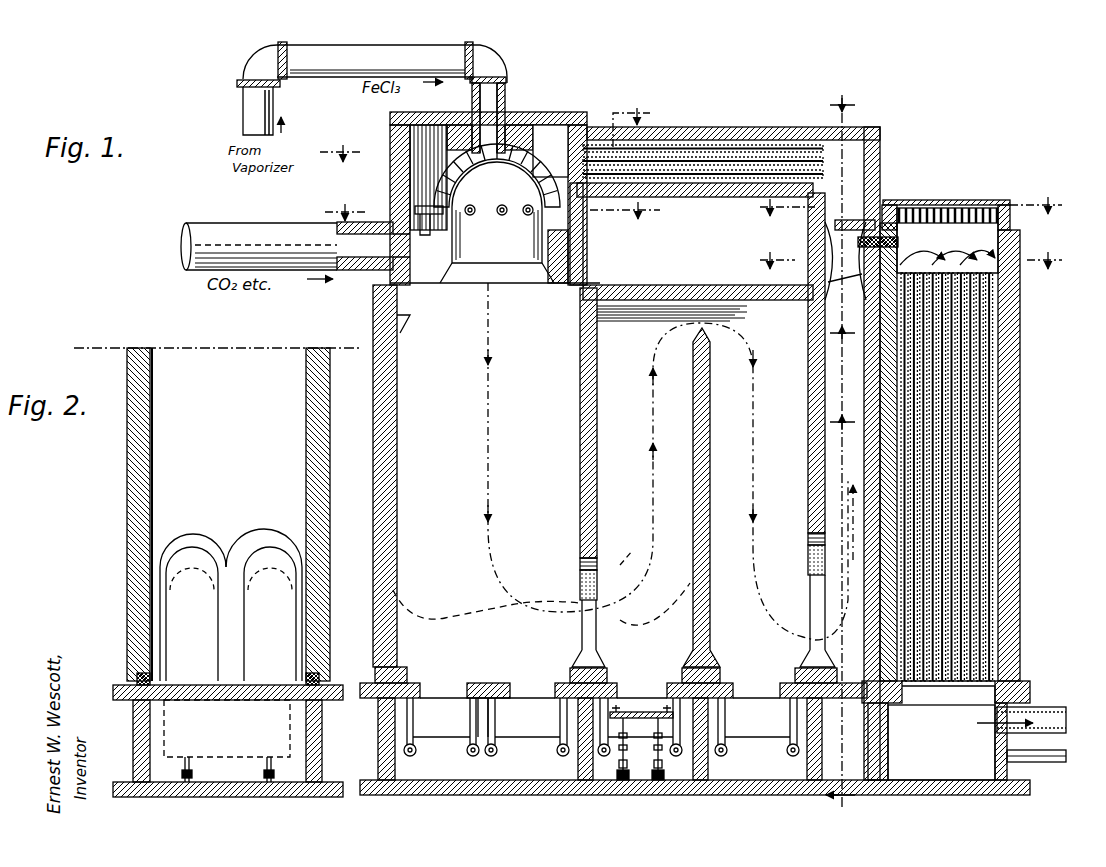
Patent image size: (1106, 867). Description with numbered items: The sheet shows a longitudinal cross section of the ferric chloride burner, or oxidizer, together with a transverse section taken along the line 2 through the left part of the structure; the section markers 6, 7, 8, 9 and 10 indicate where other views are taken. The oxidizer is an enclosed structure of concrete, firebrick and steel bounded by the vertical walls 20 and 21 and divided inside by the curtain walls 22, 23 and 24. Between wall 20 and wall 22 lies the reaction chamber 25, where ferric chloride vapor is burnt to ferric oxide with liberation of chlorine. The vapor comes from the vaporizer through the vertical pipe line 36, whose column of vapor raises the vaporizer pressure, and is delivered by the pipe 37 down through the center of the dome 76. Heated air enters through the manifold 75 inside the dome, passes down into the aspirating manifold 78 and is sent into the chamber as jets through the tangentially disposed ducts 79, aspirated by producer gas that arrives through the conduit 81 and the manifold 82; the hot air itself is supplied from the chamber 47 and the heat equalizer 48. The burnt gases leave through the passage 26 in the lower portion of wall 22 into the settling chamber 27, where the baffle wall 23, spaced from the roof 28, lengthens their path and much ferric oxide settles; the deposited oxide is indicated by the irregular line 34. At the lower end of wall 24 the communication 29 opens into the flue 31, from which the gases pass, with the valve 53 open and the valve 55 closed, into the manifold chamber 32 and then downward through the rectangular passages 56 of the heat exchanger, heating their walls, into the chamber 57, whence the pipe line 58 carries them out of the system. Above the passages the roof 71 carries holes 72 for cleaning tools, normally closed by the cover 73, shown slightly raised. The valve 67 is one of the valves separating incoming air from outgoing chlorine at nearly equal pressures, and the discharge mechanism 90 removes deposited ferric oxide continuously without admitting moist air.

In FIG. 1, the section line 2— 2 is at (840, 608).
In FIG. 1, the section line 6- 6 is at (485, 127).
In FIG. 1, the section line 7- 7 is at (492, 204).
In FIG. 1, the section line 8- 8 is at (842, 443).
In FIG. 1, the section line 9- 9 is at (910, 260).
In FIG. 1, the section line 10- 10 is at (910, 205).
In FIG. 1, the vertical wall 20 is at (375, 330).
In FIG. 1, the vertical wall 21 is at (853, 152).
In FIG. 1, the curtain wall 22 is at (580, 468).
In FIG. 1, the curtain wall 23 is at (693, 432).
In FIG. 2, the curtain wall 23 is at (135, 463).
In FIG. 1, the curtain wall 24 is at (812, 410).
In FIG. 1, the reaction chamber 25 is at (462, 441).
In FIG. 1, the passage 26 is at (570, 585).
In FIG. 2, the passage 26 is at (125, 578).
In FIG. 1, the settling chamber 27 is at (655, 411).
In FIG. 1, the roof 28 is at (657, 320).
In FIG. 1, the lower-end communication 29 is at (812, 605).
In FIG. 2, the lower-end communication 29 is at (212, 633).
In FIG. 1, the flue 31 is at (843, 505).
In FIG. 1, the manifold (chamber) 32 is at (947, 248).
In FIG. 1, the deposited ferric oxide 34 is at (465, 601).
In FIG. 1, the pipe line 36 is at (243, 117).
In FIG. 1, the pipe 37 is at (494, 112).
In FIG. 1, the chamber 47 is at (1066, 777).
In FIG. 1, the heat equalizer 48 is at (700, 147).
In FIG. 1, the valve 53 is at (845, 272).
In FIG. 1, the valve 55 is at (940, 390).
In FIG. 1, the rectangular passages 56 is at (952, 565).
In FIG. 1, the chamber 57 is at (947, 730).
In FIG. 1, the pipe line 58 is at (1022, 707).
In FIG. 1, the valve 67 is at (852, 220).
In FIG. 1, the roof 71 is at (935, 209).
In FIG. 1, the holes 72 is at (977, 212).
In FIG. 1, the cover 73 is at (962, 200).
In FIG. 1, the manifold 75 is at (550, 151).
In FIG. 1, the dome 76 is at (398, 133).
In FIG. 1, the aspirating manifold 78 is at (590, 213).
In FIG. 1, the tangentially disposed ducts 79 is at (501, 216).
In FIG. 1, the conduit 81 is at (213, 231).
In FIG. 1, the manifold 82 is at (585, 252).
In FIG. 1, the discharge mechanism 90 is at (601, 731).
In FIG. 2, the discharge mechanism 90 is at (227, 741).